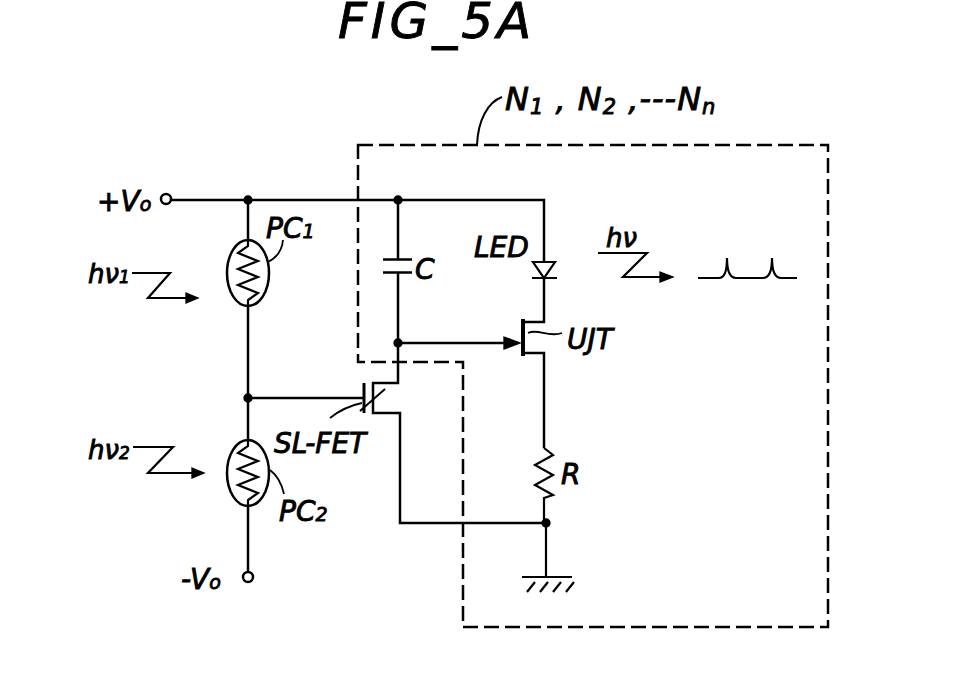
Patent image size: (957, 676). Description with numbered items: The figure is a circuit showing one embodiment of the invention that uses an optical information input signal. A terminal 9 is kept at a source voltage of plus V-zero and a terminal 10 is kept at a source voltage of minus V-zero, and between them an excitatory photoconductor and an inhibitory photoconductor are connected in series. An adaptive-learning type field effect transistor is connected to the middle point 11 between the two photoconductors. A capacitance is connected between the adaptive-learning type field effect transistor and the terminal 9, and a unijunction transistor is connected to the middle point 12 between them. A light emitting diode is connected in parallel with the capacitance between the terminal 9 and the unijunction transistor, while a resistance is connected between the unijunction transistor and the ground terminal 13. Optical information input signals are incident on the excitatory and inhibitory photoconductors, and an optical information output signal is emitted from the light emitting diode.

The +V0 terminal 9 is at (169, 193).
The -V0 terminal 10 is at (254, 577).
The intermediate point 11 is at (248, 398).
The intermediate point 12 is at (403, 338).
The earth terminal 13 is at (551, 523).